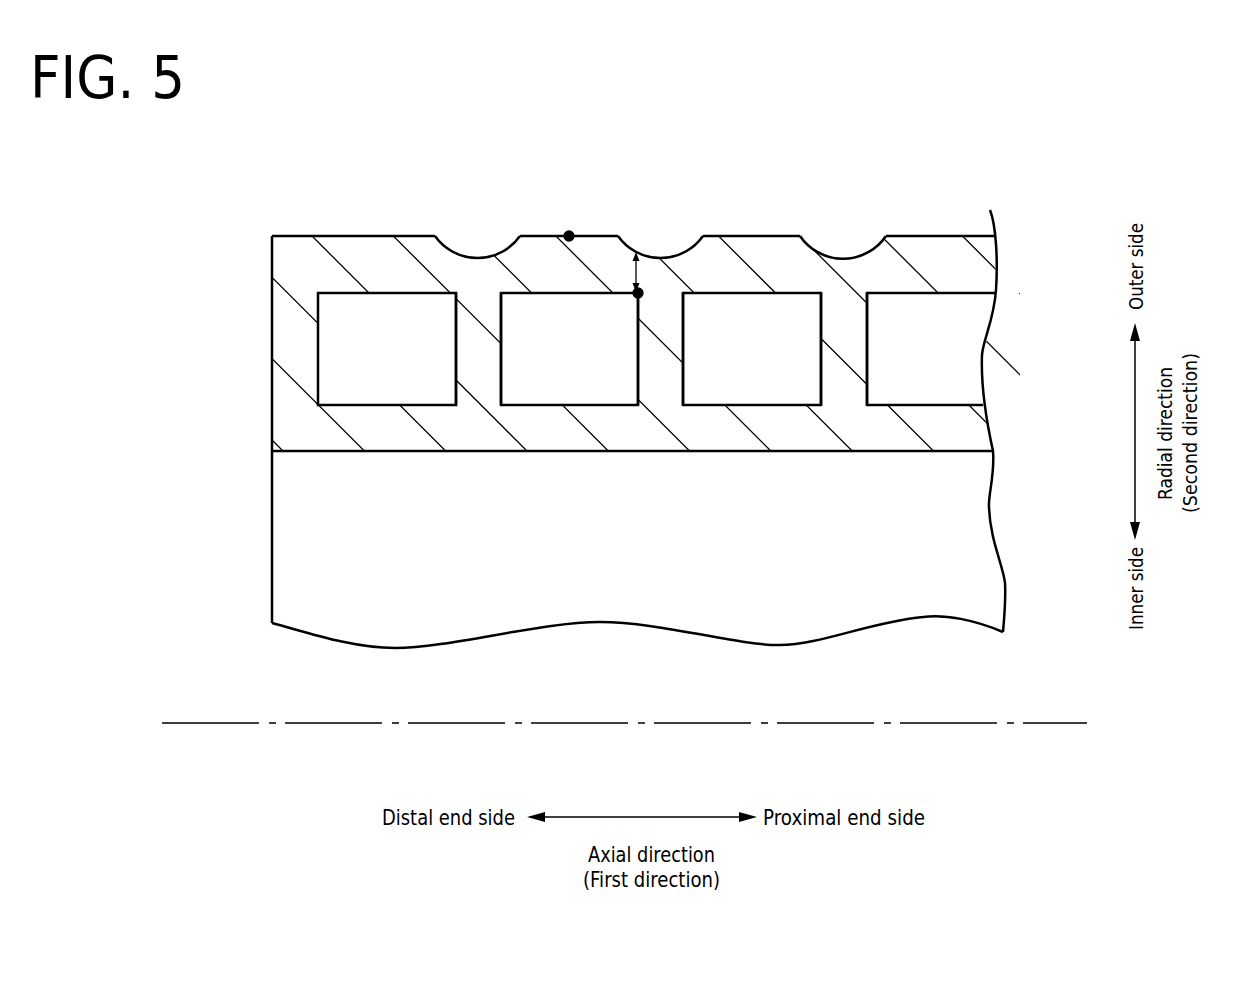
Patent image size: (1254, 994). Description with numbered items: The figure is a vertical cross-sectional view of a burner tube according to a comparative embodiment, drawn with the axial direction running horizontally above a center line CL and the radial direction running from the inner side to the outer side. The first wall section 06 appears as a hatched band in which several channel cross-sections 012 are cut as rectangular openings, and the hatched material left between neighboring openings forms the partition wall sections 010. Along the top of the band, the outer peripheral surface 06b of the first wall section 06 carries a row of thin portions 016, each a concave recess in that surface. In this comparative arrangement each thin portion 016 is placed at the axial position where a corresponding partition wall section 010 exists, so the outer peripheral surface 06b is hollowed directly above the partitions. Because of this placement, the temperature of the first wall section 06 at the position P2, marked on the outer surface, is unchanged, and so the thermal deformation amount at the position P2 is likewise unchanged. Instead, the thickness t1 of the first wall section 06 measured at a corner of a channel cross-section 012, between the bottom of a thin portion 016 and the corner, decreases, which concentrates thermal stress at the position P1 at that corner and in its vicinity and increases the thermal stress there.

The first wall section 06 is at (341, 258).
The outer peripheral surface 06b is at (768, 236).
The thin portion 016 is at (457, 257).
The partition wall section 010 is at (295, 358).
The channel cross-section 012 is at (387, 367).
The position P1 is at (639, 289).
The position P2 is at (569, 232).
The thickness t1 is at (632, 279).
The center line CL is at (645, 723).